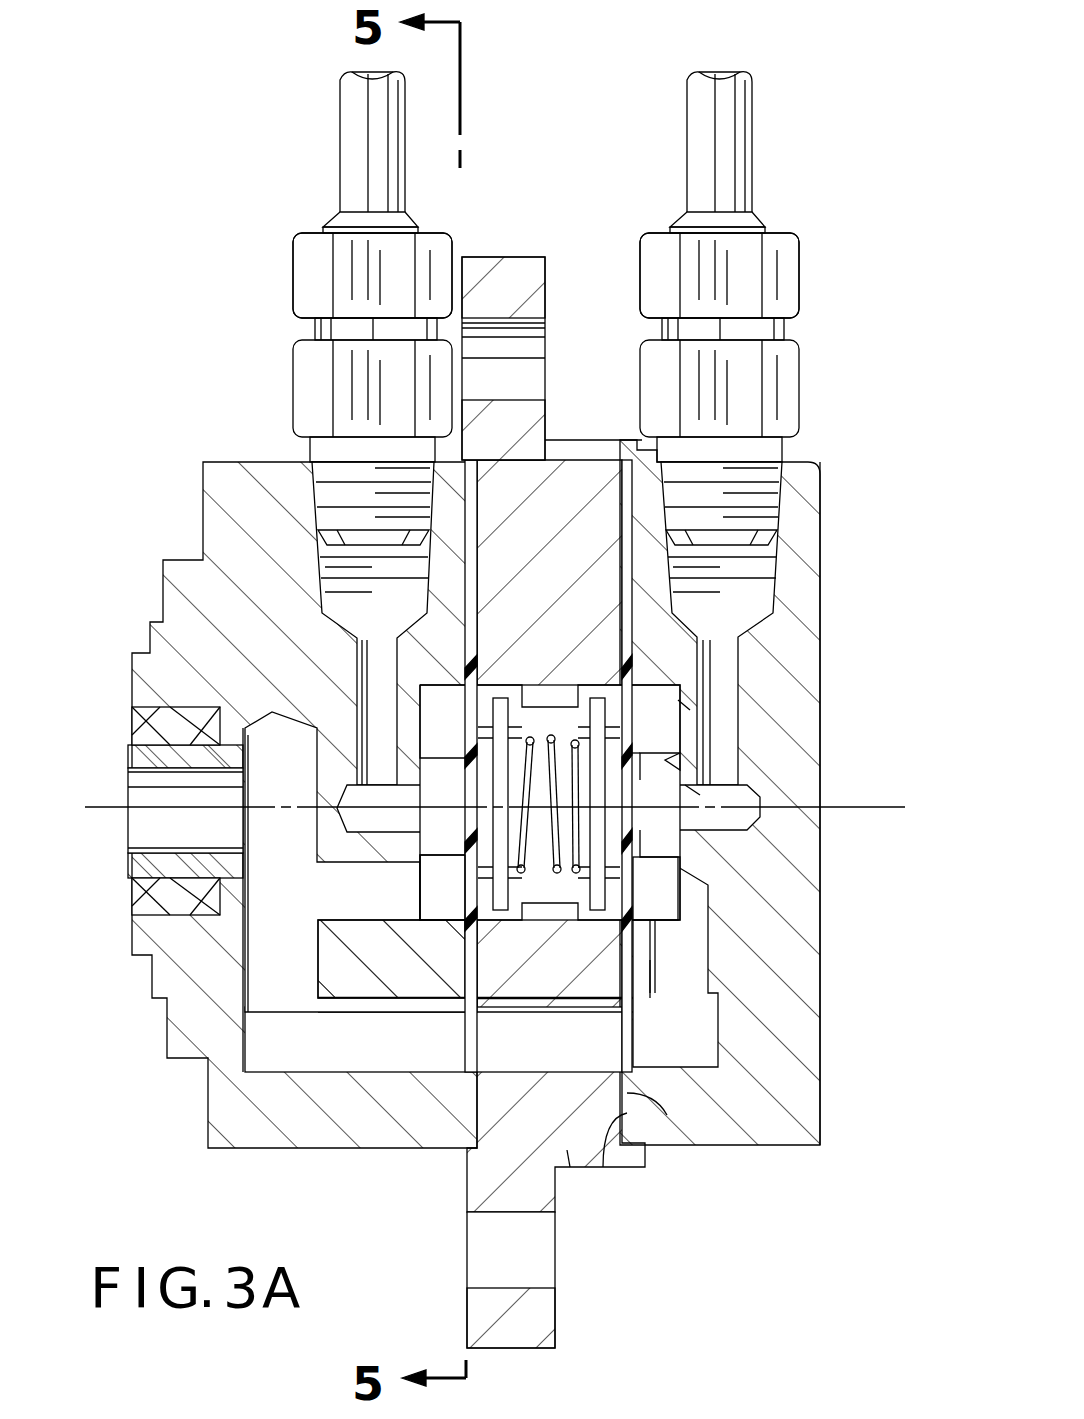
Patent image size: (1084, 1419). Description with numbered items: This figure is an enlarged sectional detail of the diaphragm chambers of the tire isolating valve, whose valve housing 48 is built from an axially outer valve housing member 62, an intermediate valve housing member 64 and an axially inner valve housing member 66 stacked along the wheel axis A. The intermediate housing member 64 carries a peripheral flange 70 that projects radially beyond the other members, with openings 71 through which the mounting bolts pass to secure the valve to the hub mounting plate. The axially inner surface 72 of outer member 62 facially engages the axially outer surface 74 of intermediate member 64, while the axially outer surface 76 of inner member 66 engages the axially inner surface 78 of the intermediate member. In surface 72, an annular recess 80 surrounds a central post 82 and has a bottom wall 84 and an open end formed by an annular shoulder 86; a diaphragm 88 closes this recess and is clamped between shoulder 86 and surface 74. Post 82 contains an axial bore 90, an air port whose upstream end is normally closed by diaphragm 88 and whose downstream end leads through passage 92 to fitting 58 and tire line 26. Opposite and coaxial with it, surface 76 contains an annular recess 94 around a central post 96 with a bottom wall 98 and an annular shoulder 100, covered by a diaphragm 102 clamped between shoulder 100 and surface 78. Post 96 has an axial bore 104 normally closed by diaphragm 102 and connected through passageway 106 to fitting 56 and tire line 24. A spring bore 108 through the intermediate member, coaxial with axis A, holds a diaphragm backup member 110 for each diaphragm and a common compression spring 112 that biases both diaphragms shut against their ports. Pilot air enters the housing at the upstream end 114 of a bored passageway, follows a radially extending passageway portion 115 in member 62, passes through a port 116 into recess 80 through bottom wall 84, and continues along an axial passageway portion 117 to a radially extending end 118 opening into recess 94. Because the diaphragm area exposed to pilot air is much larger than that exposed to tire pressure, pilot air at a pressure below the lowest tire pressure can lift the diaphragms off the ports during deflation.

The line 24 is at (752, 140).
The line 26 is at (360, 148).
The valve housing 48 is at (832, 448).
The fitting 56 is at (790, 275).
The fitting 58 is at (330, 288).
The axially outer valve housing member 62 is at (258, 462).
The intermediate valve housing member 64 is at (568, 1150).
The axially inner valve housing member 66 is at (790, 1120).
The peripheral flange 70 is at (478, 1318).
The openings 71 is at (522, 352).
The axially inner surface 72 is at (470, 1113).
The axially outer surface 74 is at (478, 1098).
The axially outer surface 76 is at (603, 1130).
The axially inner surface 78 is at (662, 1105).
The annular recess 80 is at (457, 1000).
The central post 82 is at (466, 770).
The bottom wall 84 is at (440, 750).
The annular shoulder 86 is at (495, 960).
The diaphragm 88 is at (259, 880).
The axial bore 90 is at (401, 808).
The passage 92 is at (362, 695).
The annular recess 94 is at (665, 740).
The central post 96 is at (690, 795).
The bottom wall 98 is at (670, 762).
The annular shoulder 100 is at (625, 640).
The diaphragm 102 is at (702, 720).
The axial bore 104 is at (690, 820).
The passageway 106 is at (722, 660).
The spring bore 108 is at (550, 730).
The diaphragm backup member 110 is at (500, 848).
The compression spring 112 is at (550, 905).
The upstream end 114 is at (272, 745).
The radially extending passageway portion 115 is at (361, 862).
The port 116 is at (333, 898).
The passageway portion 117 is at (482, 1025).
The radially extending end 118 is at (688, 968).
The wheel axis A is at (905, 807).